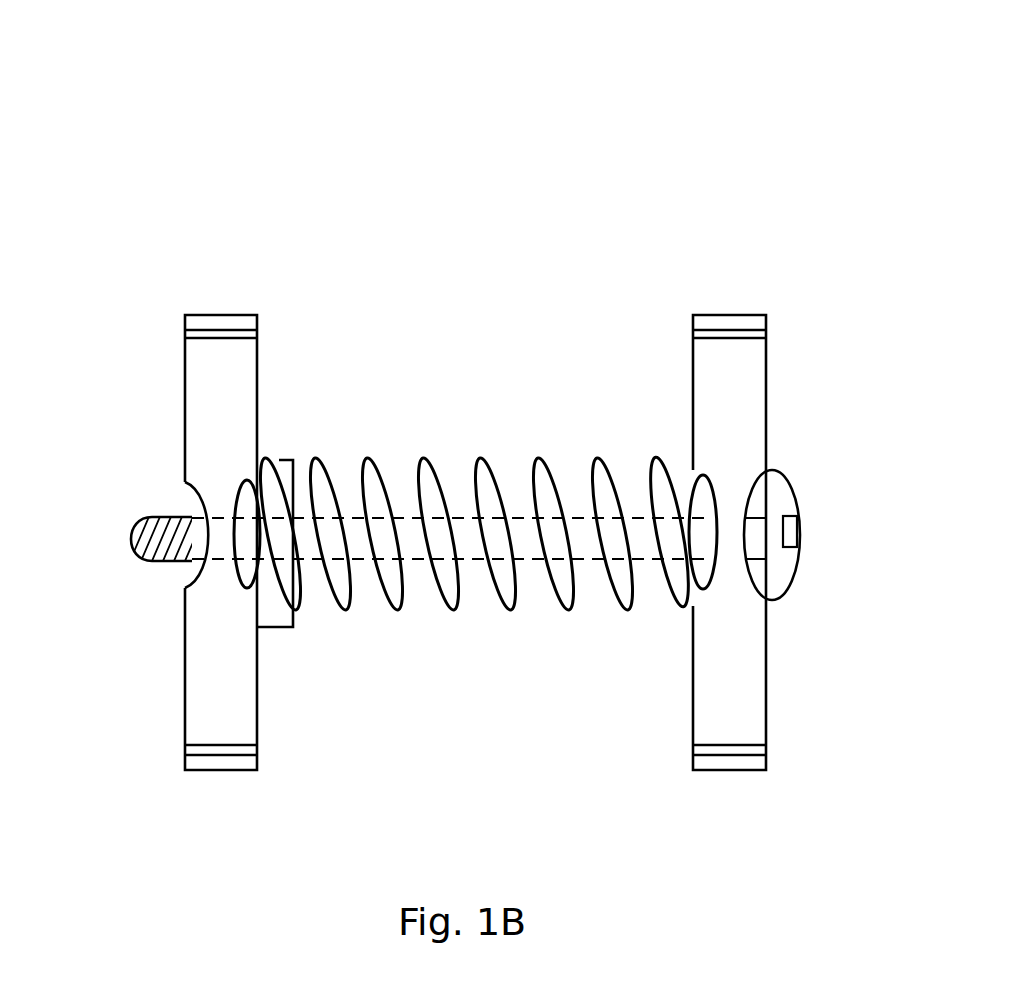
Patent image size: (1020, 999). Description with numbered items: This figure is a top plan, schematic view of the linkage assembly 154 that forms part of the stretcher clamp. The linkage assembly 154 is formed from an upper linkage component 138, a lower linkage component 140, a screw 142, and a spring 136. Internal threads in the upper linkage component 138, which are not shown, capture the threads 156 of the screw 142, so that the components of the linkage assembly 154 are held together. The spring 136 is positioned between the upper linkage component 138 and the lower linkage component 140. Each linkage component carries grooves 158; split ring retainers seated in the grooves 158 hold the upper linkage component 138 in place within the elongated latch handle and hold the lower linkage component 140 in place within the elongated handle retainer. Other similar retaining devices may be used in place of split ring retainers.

The linkage assembly 154 is at (811, 158).
The upper linkage component 138 is at (224, 299).
The lower linkage component 140 is at (731, 300).
The spring 136 is at (492, 460).
The screw 142 is at (796, 493).
The threads 156 is at (184, 516).
The grooves 158 is at (693, 748).